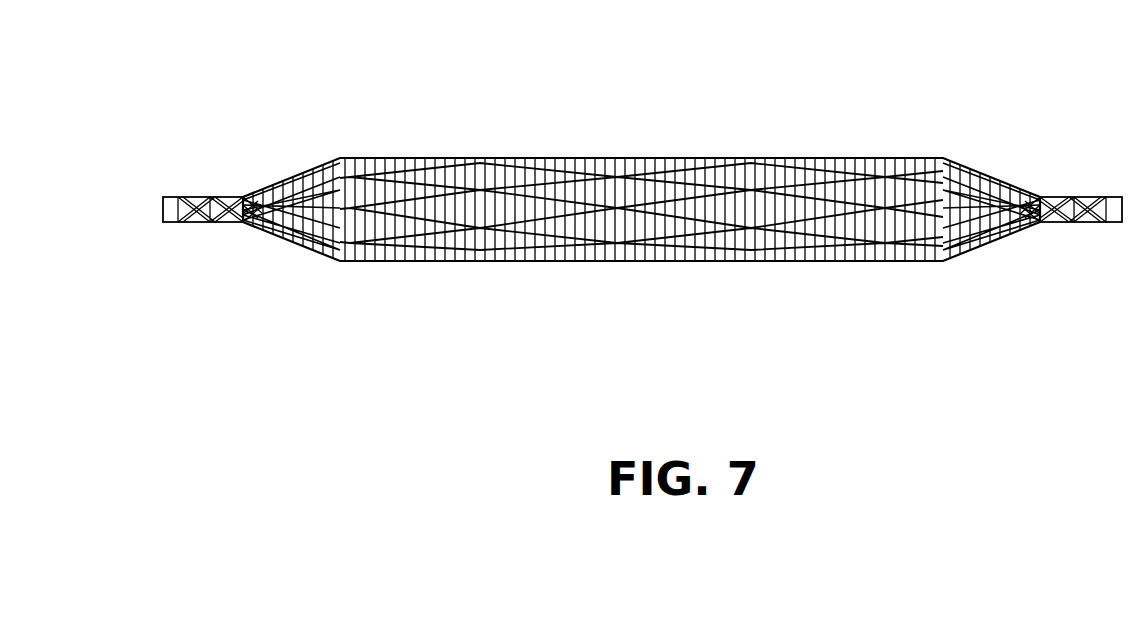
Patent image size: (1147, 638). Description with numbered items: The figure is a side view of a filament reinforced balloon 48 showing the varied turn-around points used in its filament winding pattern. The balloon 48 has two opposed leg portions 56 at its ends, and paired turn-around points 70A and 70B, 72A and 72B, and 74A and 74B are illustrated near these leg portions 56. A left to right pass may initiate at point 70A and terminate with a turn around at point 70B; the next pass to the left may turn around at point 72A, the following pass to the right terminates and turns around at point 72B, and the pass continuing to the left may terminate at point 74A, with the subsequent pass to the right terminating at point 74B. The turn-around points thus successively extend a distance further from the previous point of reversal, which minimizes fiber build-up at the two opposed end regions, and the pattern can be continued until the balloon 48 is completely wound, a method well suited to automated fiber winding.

The balloon 48 is at (495, 132).
The leg portions 56 is at (647, 216).
The turn-around point 70A is at (243, 224).
The turn-around point 70B is at (1041, 224).
The turn-around point 72A is at (210, 224).
The turn-around point 72B is at (1074, 224).
The turn-around point 74A is at (178, 224).
The turn-around point 74B is at (1106, 224).